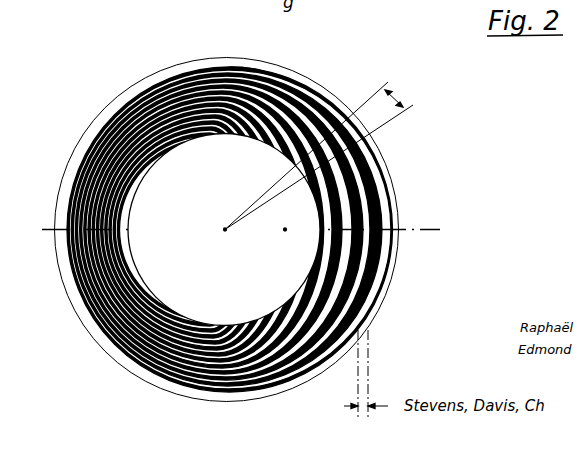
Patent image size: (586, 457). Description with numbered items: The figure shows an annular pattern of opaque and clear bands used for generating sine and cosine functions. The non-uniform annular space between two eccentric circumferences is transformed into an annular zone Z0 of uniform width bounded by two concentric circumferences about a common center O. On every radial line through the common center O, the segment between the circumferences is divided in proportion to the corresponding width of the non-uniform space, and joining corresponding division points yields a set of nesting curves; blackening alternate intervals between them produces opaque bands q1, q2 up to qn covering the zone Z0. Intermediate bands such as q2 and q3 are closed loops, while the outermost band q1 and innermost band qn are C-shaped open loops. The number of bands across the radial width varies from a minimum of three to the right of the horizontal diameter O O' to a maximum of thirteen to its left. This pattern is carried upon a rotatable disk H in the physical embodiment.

The opaque band q1 is at (101, 122).
The opaque band q2 is at (139, 95).
The opaque band q3 is at (181, 78).
The opaque band qn is at (174, 146).
The annular zone Z0 is at (239, 66).
The common center O is at (223, 241).
The end of horizontal diameter O' is at (286, 241).
The disk H is at (245, 397).